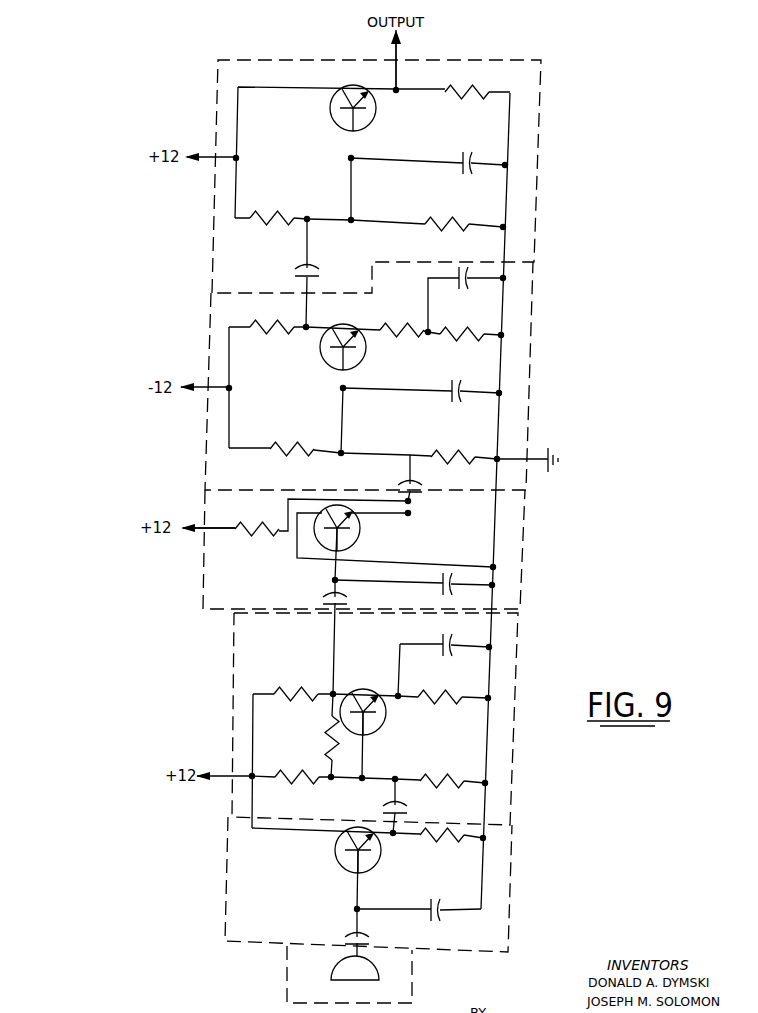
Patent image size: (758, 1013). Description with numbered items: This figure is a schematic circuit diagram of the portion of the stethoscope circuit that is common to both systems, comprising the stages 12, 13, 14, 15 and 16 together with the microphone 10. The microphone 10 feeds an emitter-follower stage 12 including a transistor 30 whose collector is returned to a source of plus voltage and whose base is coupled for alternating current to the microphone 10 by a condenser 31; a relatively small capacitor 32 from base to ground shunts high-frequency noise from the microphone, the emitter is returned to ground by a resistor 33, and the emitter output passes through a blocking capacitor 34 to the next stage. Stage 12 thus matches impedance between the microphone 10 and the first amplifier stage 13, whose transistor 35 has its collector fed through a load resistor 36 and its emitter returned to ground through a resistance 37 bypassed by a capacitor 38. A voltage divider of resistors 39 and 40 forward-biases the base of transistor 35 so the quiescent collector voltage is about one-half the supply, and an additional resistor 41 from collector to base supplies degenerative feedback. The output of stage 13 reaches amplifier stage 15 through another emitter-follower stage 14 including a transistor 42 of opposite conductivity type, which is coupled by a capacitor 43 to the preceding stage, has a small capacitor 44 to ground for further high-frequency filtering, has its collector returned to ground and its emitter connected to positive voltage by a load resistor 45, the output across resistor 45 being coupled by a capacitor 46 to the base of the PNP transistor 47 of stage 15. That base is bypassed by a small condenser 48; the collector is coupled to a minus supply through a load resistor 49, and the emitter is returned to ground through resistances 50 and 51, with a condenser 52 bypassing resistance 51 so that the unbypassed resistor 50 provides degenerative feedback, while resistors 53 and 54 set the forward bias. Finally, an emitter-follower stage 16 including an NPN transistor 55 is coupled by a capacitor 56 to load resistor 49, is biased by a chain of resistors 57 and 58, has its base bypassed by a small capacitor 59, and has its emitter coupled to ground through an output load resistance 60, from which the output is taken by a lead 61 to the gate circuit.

The microphone 10 is at (287, 1002).
The emitter-follower stage 12 is at (512, 878).
The first amplifier stage 13 is at (520, 660).
The emitter-follower stage 14 is at (522, 568).
The amplifier stage 15 is at (530, 358).
The emitter-follower stage 16 is at (538, 153).
The transistor 30 is at (338, 858).
The condenser 31 is at (347, 938).
The capacitor 32 is at (430, 903).
The resistor 33 is at (437, 844).
The blocking capacitor 34 is at (402, 812).
The transistor 35 is at (380, 665).
The load resistor 36 is at (285, 664).
The resistance 37 is at (428, 705).
The capacitor 38 is at (441, 640).
The resistor 39 is at (290, 749).
The resistor 40 is at (450, 767).
The resistor 41 is at (327, 735).
The transistor 42 is at (360, 533).
The capacitor 43 is at (322, 597).
The capacitor 44 is at (437, 588).
The load resistor 45 is at (247, 517).
The capacitor 46 is at (410, 482).
The transistor 47 is at (325, 365).
The condenser 48 is at (445, 400).
The load resistor 49 is at (263, 322).
The resistor 50 is at (398, 325).
The resistance 51 is at (465, 345).
The condenser 52 is at (456, 290).
The resistor 53 is at (297, 435).
The resistor 54 is at (447, 450).
The transistor 55 is at (336, 123).
The capacitor 56 is at (297, 268).
The resistor 57 is at (290, 208).
The resistor 58 is at (432, 212).
The capacitor 59 is at (461, 151).
The output load resistance 60 is at (447, 100).
The lead 61 is at (400, 52).